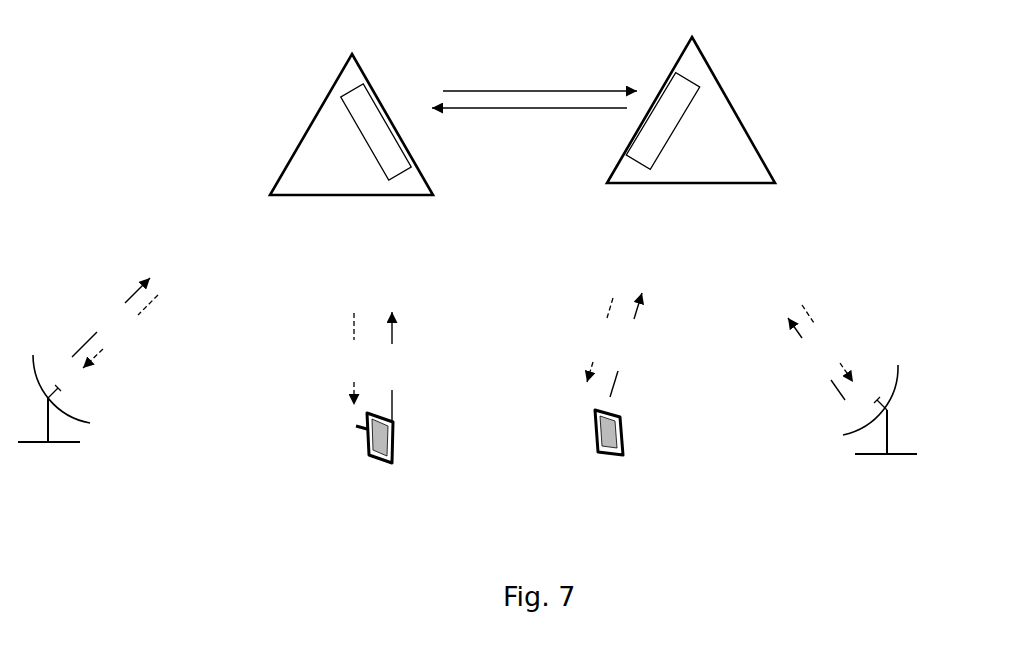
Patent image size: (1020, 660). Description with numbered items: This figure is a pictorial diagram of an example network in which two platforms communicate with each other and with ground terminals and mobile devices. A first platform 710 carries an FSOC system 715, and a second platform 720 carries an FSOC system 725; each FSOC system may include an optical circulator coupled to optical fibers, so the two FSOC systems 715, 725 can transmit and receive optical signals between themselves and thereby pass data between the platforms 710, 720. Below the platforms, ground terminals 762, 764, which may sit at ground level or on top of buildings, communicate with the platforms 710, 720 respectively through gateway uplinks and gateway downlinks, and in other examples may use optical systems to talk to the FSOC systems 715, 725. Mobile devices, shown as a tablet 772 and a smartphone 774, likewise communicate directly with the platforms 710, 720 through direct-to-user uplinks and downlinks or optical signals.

The first platform 710 is at (290, 160).
The FSOC system 715 is at (377, 96).
The second platform 720 is at (740, 172).
The FSOC system 725 is at (668, 78).
The ground terminal 762 is at (68, 443).
The ground terminal 764 is at (883, 456).
The tablet 772 is at (372, 446).
The smartphone 774 is at (623, 436).